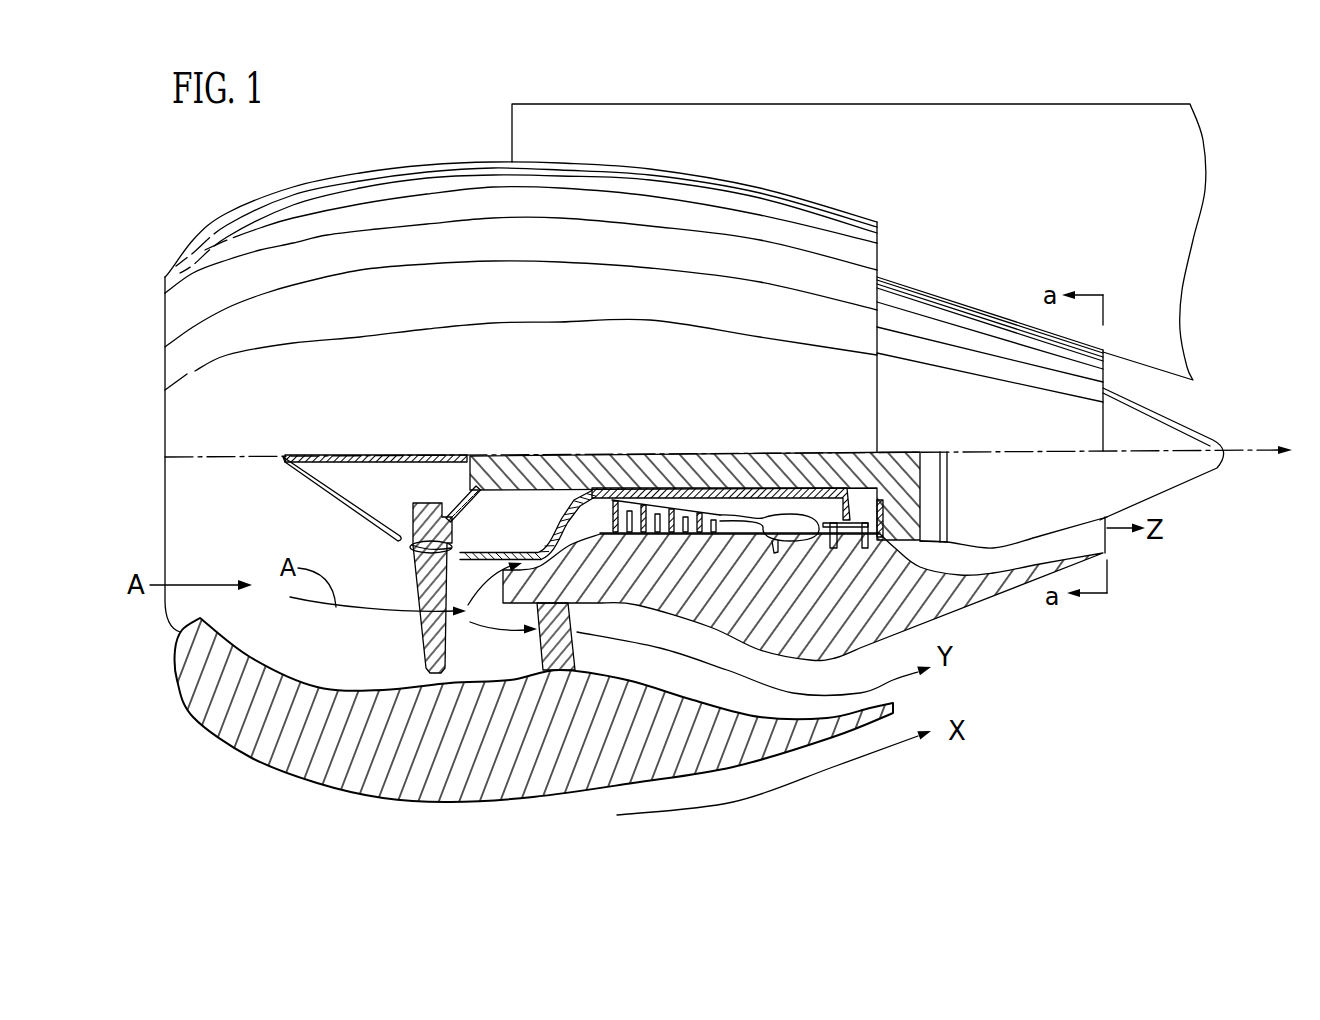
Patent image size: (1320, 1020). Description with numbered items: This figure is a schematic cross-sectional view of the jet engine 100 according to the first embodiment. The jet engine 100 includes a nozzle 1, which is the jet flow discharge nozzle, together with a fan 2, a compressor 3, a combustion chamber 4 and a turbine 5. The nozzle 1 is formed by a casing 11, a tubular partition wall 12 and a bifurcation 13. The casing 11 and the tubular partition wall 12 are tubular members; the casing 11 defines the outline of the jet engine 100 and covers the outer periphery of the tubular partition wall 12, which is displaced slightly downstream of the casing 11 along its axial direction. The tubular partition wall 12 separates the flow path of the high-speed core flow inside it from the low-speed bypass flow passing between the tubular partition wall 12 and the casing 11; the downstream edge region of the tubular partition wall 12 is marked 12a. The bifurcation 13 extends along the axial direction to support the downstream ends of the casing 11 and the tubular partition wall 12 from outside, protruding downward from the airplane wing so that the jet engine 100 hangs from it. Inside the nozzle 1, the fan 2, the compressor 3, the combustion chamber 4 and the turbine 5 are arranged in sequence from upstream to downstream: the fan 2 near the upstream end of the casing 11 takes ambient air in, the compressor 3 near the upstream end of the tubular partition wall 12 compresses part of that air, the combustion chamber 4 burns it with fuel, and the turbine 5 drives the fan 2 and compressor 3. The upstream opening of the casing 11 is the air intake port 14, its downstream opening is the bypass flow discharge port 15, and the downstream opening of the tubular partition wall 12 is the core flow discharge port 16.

The nozzle 1 is at (200, 188).
The fan 2 is at (428, 503).
The compressor 3 is at (632, 497).
The combustion chamber 4 is at (797, 530).
The turbine 5 is at (858, 520).
The casing 11 is at (341, 205).
The tubular partition wall 12 is at (940, 332).
The trailing edge of core cowl 12a is at (1106, 554).
The bifurcation 13 is at (736, 130).
The air intake port 14 is at (190, 548).
The bypass flow discharge port 15 is at (872, 670).
The core flow discharge port 16 is at (1160, 512).
The jet engine 100 is at (370, 810).